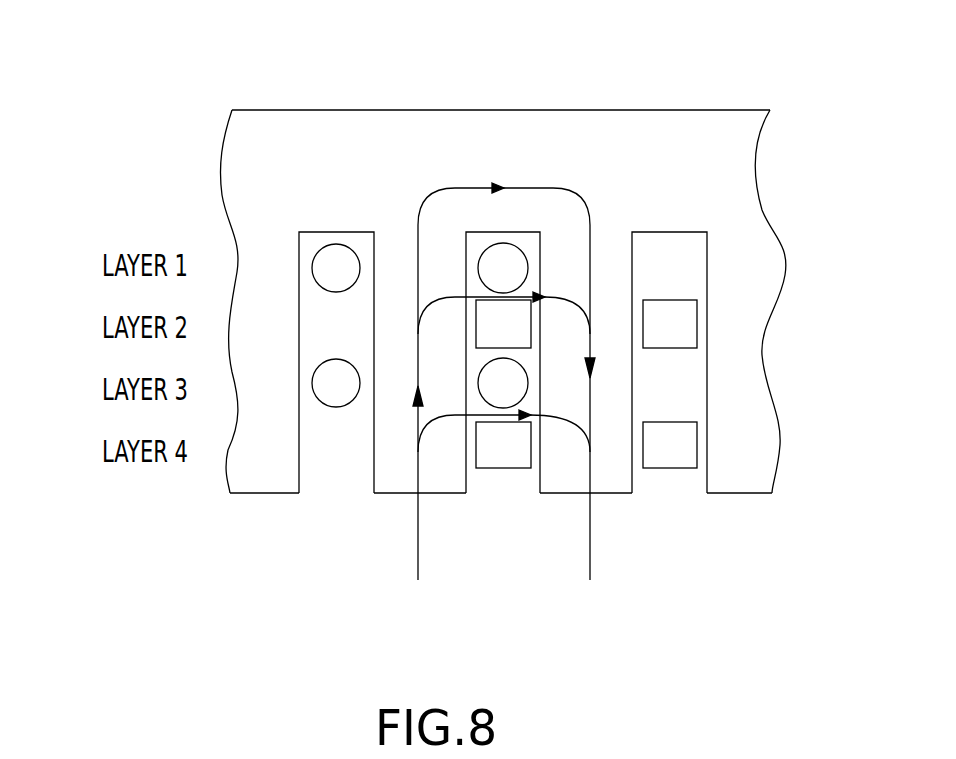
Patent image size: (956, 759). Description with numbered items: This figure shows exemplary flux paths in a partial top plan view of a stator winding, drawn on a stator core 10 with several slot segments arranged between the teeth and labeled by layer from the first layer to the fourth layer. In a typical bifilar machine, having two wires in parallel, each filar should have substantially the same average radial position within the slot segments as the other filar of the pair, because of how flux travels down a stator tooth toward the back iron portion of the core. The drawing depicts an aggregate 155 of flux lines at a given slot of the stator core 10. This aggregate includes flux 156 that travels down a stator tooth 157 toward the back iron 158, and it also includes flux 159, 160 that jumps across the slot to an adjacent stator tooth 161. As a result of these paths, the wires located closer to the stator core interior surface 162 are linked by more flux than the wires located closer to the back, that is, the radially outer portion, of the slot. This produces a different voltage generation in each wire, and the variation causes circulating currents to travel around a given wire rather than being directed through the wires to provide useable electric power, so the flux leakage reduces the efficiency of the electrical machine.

The stator core 10 is at (486, 296).
The aggregate of flux lines 155 is at (590, 557).
The flux 156 is at (547, 188).
The stator tooth 157 is at (382, 481).
The back iron 158 is at (315, 148).
The flux 159 is at (443, 295).
The flux 160 is at (437, 423).
The adjacent stator tooth 161 is at (620, 482).
The stator core interior surface 162 is at (252, 493).